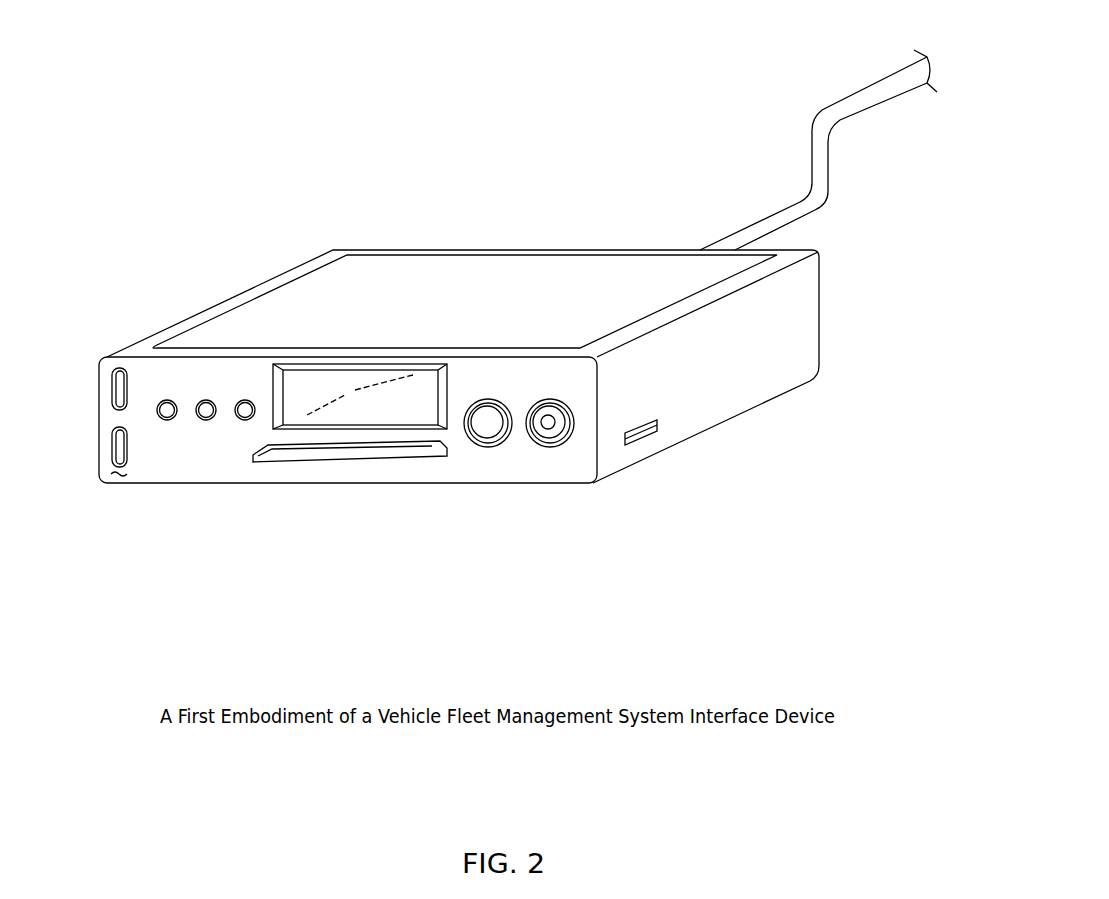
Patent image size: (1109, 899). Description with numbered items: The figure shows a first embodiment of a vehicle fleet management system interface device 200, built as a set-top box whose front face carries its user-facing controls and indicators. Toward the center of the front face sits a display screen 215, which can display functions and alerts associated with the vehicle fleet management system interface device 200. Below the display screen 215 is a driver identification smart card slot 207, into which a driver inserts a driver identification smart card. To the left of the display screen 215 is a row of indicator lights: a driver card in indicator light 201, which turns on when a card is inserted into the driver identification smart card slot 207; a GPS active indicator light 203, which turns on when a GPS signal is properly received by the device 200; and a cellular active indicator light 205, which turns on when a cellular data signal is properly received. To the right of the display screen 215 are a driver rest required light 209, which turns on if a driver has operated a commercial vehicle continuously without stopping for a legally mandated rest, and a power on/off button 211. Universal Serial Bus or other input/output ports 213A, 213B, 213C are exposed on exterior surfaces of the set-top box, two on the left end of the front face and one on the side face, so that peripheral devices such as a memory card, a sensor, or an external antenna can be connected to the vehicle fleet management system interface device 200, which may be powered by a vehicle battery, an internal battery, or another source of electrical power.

The vehicle fleet management system interface device 200 is at (499, 429).
The driver card in indicator light 201 is at (160, 433).
The GPS active indicator light 203 is at (200, 433).
The cellular active indicator light 205 is at (241, 433).
The driver identification smart card slot 207 is at (348, 480).
The driver rest required light 209 is at (490, 449).
The power on/off button 211 is at (560, 449).
The input/output port 213A is at (106, 375).
The input/output port 213B is at (110, 457).
The input/output port 213C is at (652, 446).
The display screen 215 is at (306, 388).